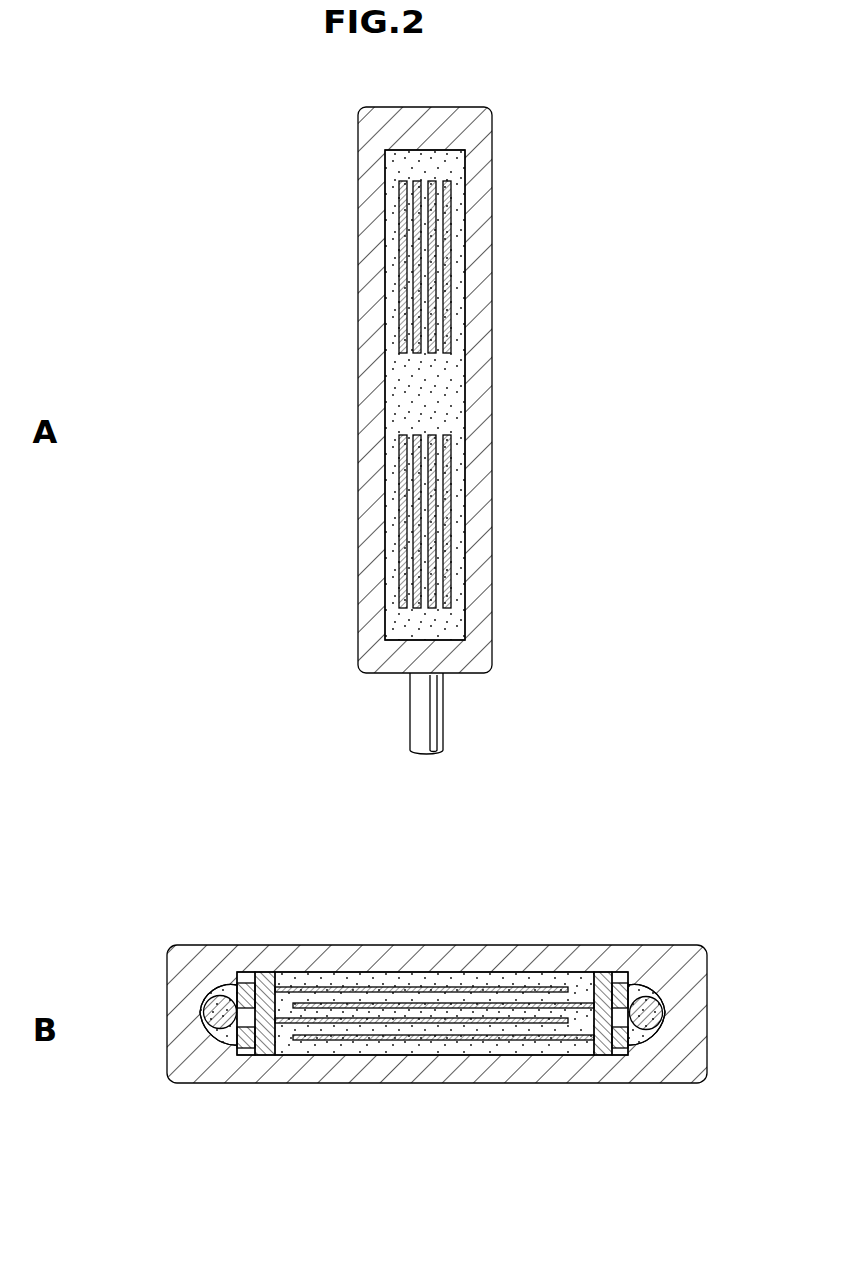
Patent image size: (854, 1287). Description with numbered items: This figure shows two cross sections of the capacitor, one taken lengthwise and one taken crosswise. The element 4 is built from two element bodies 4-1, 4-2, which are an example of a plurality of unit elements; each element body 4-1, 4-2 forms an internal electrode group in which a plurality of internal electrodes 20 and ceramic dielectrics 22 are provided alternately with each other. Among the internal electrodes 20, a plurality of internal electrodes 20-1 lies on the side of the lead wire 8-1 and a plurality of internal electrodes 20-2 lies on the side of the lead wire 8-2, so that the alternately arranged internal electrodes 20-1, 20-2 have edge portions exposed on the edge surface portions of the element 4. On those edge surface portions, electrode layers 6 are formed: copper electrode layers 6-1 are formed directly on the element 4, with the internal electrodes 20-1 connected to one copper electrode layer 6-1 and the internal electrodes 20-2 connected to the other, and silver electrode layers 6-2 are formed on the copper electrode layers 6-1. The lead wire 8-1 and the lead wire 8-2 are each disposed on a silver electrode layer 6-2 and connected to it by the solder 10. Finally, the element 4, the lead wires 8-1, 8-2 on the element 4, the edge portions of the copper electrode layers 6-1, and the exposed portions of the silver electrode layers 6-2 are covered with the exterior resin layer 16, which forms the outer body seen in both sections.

The exterior resin layer 16 is at (453, 108).
The element 4 is at (338, 150).
The element body 4-1 is at (324, 266).
The element body 4-2 is at (324, 512).
The internal electrodes 20 is at (608, 255).
The internal electrodes 20-1 is at (447, 265).
The internal electrodes 20-2 is at (433, 310).
The ceramic dielectrics 22 is at (447, 385).
The lead wire 8-1 is at (443, 712).
The lead wire 8-2 is at (664, 1015).
The terminal 6 is at (315, 878).
The copper electrode layer 6-1 is at (261, 972).
The silver electrode layer 6-2 is at (244, 972).
The solder 10 is at (222, 1045).